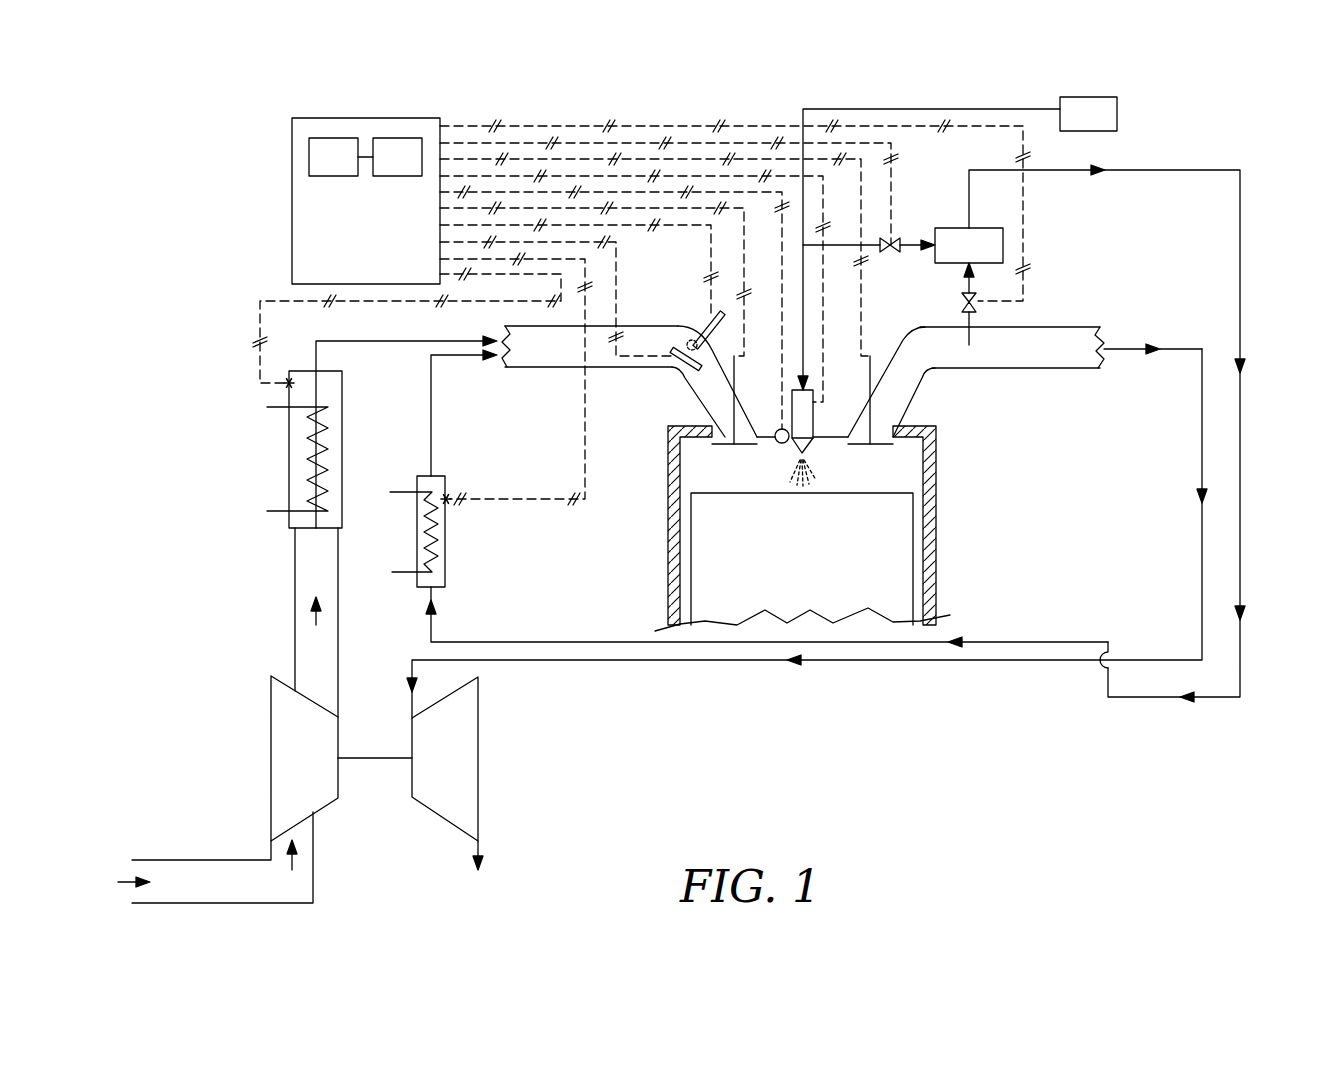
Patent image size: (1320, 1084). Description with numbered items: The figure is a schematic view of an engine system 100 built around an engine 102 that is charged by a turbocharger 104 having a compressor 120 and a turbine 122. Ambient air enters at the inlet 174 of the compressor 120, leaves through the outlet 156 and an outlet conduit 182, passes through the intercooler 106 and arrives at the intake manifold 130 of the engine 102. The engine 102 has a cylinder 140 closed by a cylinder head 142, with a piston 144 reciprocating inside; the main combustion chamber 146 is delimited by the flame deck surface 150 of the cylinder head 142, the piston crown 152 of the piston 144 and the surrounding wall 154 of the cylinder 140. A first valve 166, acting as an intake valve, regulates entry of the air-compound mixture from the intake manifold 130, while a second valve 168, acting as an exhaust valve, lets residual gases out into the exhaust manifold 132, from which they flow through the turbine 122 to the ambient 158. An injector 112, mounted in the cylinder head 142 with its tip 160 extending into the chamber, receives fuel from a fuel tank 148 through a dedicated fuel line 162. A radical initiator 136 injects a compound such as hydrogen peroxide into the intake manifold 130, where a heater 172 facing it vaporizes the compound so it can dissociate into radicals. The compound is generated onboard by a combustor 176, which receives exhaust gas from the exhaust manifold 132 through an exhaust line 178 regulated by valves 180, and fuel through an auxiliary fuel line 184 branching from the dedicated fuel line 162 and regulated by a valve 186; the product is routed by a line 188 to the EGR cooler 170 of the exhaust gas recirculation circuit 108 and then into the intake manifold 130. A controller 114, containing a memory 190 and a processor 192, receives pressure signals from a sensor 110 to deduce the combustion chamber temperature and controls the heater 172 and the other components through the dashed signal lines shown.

The engine system 100 is at (1212, 143).
The engine 102 is at (950, 572).
The turbocharger 104 is at (478, 793).
The intercooler 106 is at (342, 478).
The exhaust gas recirculation (EGR) circuit 108 is at (431, 600).
The sensor 110 is at (785, 452).
The injector 112 is at (815, 422).
The controller 114 is at (621, 296).
The compressor 120 is at (325, 806).
The turbine 122 is at (478, 697).
The intake manifold 130 is at (530, 367).
The exhaust manifold 132 is at (1073, 369).
The radical initiator 136 is at (708, 318).
The cylinder 140 is at (930, 552).
The cylinder head 142 is at (936, 430).
The piston 144 is at (915, 597).
The main combustion chamber 146 is at (835, 478).
The fuel tank 148 is at (1117, 114).
The flame deck surface 150 is at (683, 446).
The piston crown 152 is at (900, 484).
The surrounding wall 154 is at (923, 447).
The outlet 156 is at (330, 705).
The ambient 158 is at (889, 756).
The tip 160 is at (762, 460).
The dedicated fuel line 162 is at (803, 109).
The first valve 166 is at (730, 405).
The second valve 168 is at (885, 412).
The EGR cooler 170 is at (445, 560).
The heater 172 is at (668, 347).
The inlet 174 is at (320, 885).
The combustor 176 is at (985, 228).
The exhaust line 178 is at (978, 322).
The valves 180 is at (963, 300).
The outlet conduit 182 is at (338, 538).
The auxiliary fuel line 184 is at (905, 245).
The valve 186 is at (891, 256).
The line 188 is at (1240, 543).
The memory 190 is at (335, 138).
The processor 192 is at (395, 138).